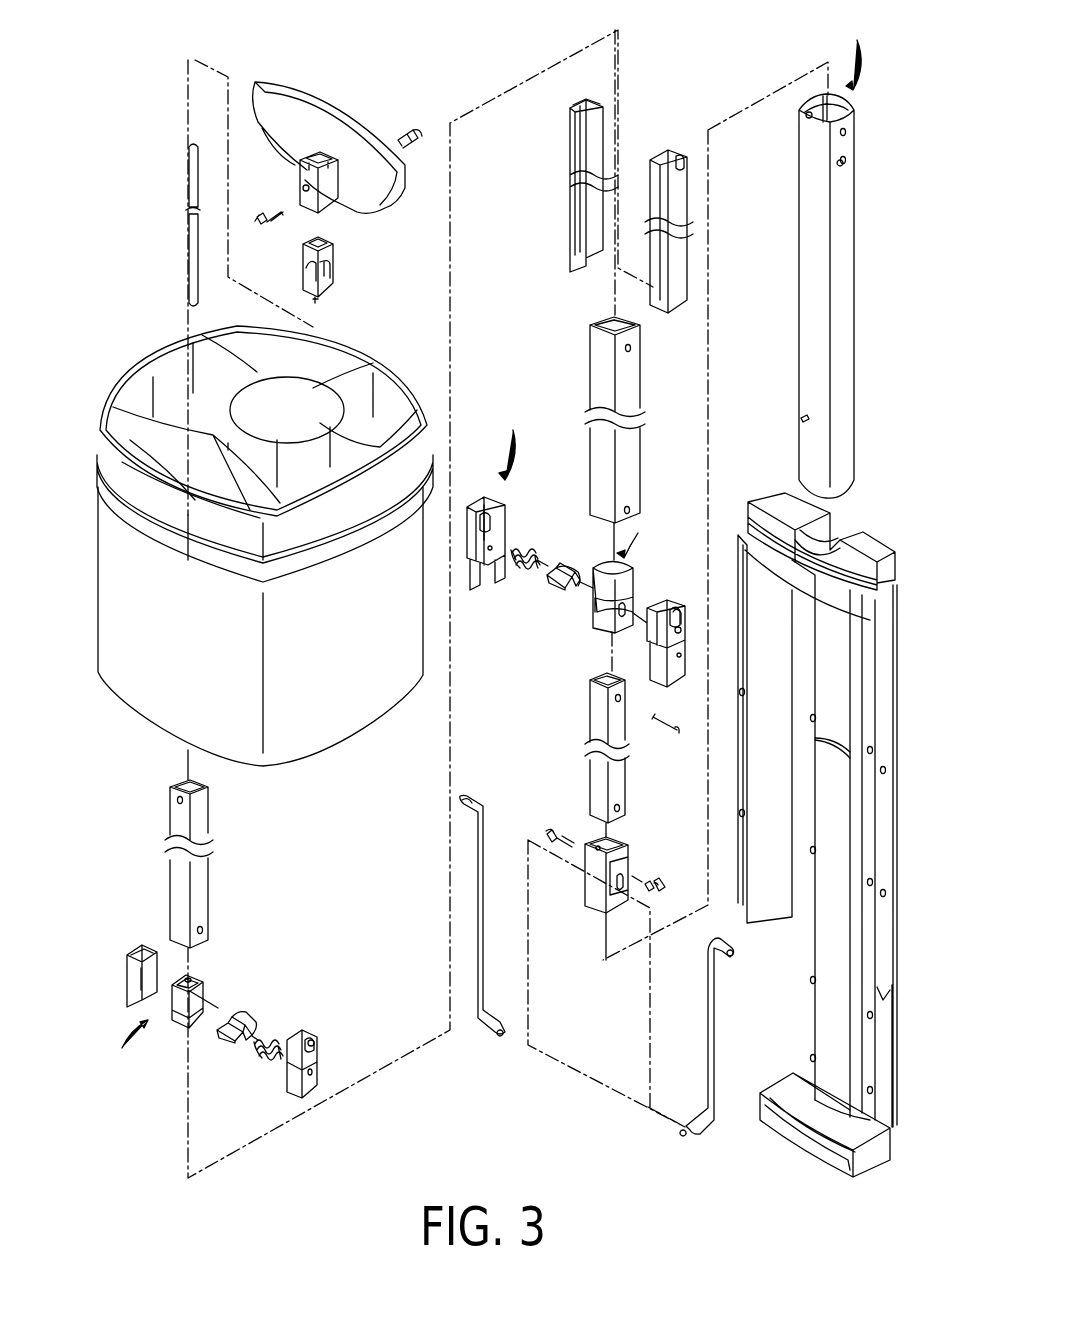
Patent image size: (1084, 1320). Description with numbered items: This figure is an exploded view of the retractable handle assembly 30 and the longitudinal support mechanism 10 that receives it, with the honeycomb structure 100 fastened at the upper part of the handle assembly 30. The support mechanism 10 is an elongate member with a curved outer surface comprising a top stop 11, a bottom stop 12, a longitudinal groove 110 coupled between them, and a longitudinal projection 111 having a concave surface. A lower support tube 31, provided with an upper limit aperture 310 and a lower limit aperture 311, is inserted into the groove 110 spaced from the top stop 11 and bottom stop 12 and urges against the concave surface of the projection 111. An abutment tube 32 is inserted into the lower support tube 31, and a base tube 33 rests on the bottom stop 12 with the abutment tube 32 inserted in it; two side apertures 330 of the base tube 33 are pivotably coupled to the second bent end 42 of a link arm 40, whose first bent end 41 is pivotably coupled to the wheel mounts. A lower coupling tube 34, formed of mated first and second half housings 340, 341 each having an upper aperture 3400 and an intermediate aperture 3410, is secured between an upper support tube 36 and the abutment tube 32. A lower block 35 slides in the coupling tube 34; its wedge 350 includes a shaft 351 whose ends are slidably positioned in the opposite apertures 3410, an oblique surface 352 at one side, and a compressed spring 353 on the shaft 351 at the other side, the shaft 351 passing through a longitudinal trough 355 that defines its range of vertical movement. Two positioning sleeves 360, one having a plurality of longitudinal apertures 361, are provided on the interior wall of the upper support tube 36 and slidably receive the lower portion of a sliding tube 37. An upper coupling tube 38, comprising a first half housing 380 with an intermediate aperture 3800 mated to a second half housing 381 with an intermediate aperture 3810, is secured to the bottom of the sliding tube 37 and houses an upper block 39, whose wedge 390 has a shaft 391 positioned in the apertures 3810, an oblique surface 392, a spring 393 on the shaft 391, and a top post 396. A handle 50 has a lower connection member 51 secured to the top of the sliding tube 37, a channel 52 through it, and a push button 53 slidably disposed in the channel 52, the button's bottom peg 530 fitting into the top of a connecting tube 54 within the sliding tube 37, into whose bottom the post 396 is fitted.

The longitudinal support mechanism 10 is at (895, 747).
The top stop 11 is at (872, 557).
The longitudinal groove 110 is at (840, 538).
The longitudinal projection 111 is at (837, 805).
The bottom stop 12 is at (870, 1157).
The retractable handle assembly 30 is at (856, 48).
The lower support tube 31 is at (855, 325).
The upper limit aperture 310 is at (845, 162).
The lower limit aperture 311 is at (803, 418).
The abutment tube 32 is at (595, 774).
The base tube 33 is at (592, 908).
The side apertures 330 is at (625, 900).
The lower coupling tube 34 is at (507, 444).
The first half housing 340 is at (470, 535).
The upper aperture 3400 is at (492, 507).
The second half housing 341 is at (682, 640).
The intermediate aperture 3410 is at (685, 605).
The lower block 35 is at (631, 563).
The wedge 350 is at (556, 590).
The shaft 351 is at (555, 565).
The oblique surface 352 is at (568, 572).
The spring 353 is at (520, 570).
The longitudinal trough 355 is at (625, 605).
The upper support tube 36 is at (633, 460).
The positioning sleeves 360 is at (580, 152).
The longitudinal apertures 361 is at (588, 122).
The sliding tube 37 is at (205, 880).
The upper coupling tube 38 is at (122, 1048).
The first half housing 380 is at (128, 950).
The intermediate aperture 3800 is at (140, 980).
The second half housing 381 is at (315, 1070).
The intermediate aperture 3810 is at (312, 1045).
The upper block 39 is at (183, 1005).
The wedge 390 is at (226, 1040).
The shaft 391 is at (215, 1012).
The oblique surface 392 is at (248, 1012).
The spring 393 is at (268, 1062).
The top post 396 is at (190, 978).
The link arm 40 is at (478, 915).
The first bent end 41 is at (462, 805).
The second bent end 42 is at (500, 1036).
The handle 50 is at (345, 118).
The lower connection member 51 is at (300, 205).
The channel 52 is at (330, 160).
The push button 53 is at (333, 250).
The bottom peg 530 is at (318, 300).
The connecting tube 54 is at (190, 172).
The honeycomb structure 100 is at (320, 760).